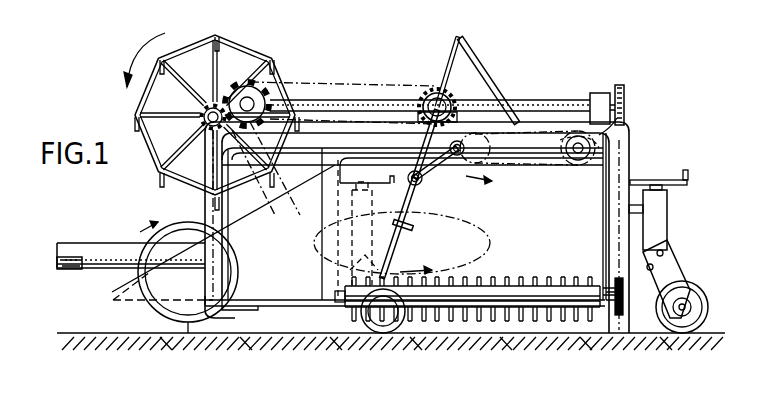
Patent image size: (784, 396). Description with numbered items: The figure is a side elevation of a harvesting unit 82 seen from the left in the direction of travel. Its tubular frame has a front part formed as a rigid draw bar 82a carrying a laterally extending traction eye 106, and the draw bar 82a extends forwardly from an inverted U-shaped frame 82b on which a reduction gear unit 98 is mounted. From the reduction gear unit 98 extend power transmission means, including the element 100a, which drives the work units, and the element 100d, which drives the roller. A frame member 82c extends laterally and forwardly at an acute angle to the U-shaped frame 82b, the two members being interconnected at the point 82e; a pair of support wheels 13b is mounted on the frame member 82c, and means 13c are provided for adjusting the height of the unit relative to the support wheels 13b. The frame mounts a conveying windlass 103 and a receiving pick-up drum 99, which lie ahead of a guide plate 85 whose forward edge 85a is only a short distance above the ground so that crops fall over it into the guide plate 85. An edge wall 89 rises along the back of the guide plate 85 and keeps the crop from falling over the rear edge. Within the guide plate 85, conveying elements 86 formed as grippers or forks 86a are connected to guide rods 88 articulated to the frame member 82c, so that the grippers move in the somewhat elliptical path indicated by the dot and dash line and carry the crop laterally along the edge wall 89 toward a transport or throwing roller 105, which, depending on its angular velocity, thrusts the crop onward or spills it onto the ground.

The conveying windlass 103 is at (230, 47).
The power transmission means 100a is at (313, 82).
The reduction gear unit 98 is at (422, 95).
The conveying elements 86 is at (446, 62).
The guide rods 88 is at (478, 58).
The harvesting unit 82 is at (628, 93).
The interconnection point 82e is at (621, 130).
The power transmission element 100d is at (629, 150).
The height adjusting means 13c is at (688, 186).
The frame member 82c is at (325, 150).
The inverted U-shaped frame 82b is at (655, 258).
The grippers or forks 86a is at (405, 255).
The edge wall 89 is at (525, 224).
The transport or throwing roller 105 is at (510, 287).
The guide plate 85 is at (290, 300).
The forward edge 85a is at (258, 310).
The support wheels 13b is at (398, 333).
The draw bar 82a is at (96, 257).
The traction eye 106 is at (65, 270).
The pick-up drum 99 is at (152, 308).